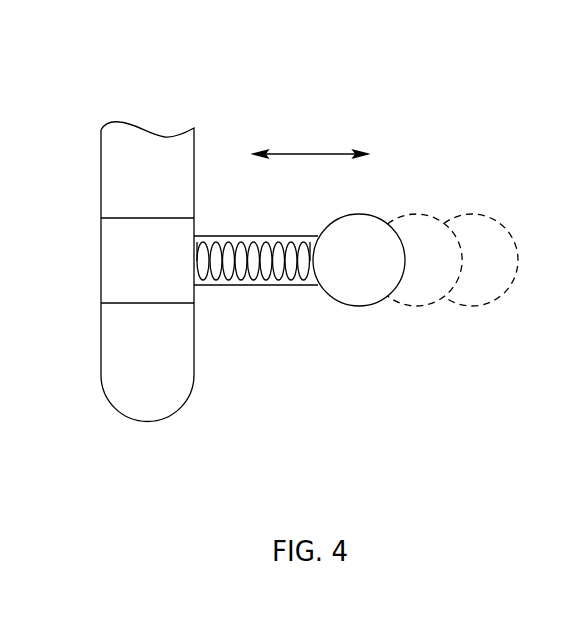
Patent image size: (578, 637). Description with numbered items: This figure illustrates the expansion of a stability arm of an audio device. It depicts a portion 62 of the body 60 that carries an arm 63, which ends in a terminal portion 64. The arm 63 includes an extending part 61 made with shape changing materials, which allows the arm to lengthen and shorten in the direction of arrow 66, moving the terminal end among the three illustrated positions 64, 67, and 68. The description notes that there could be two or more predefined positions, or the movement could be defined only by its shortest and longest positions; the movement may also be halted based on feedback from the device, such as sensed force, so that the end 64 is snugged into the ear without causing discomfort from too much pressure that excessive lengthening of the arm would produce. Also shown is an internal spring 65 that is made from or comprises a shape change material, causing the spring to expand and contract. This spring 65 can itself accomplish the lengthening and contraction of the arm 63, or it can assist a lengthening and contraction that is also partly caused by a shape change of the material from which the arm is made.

The body 60 is at (282, 86).
The extending part 61 is at (217, 298).
The portion of body 62 is at (115, 161).
The arm 63 is at (137, 262).
The terminal portion 64 is at (349, 296).
The internal spring 65 is at (284, 280).
The arrow 66 is at (319, 154).
The second position 67 is at (415, 300).
The third position 68 is at (479, 301).